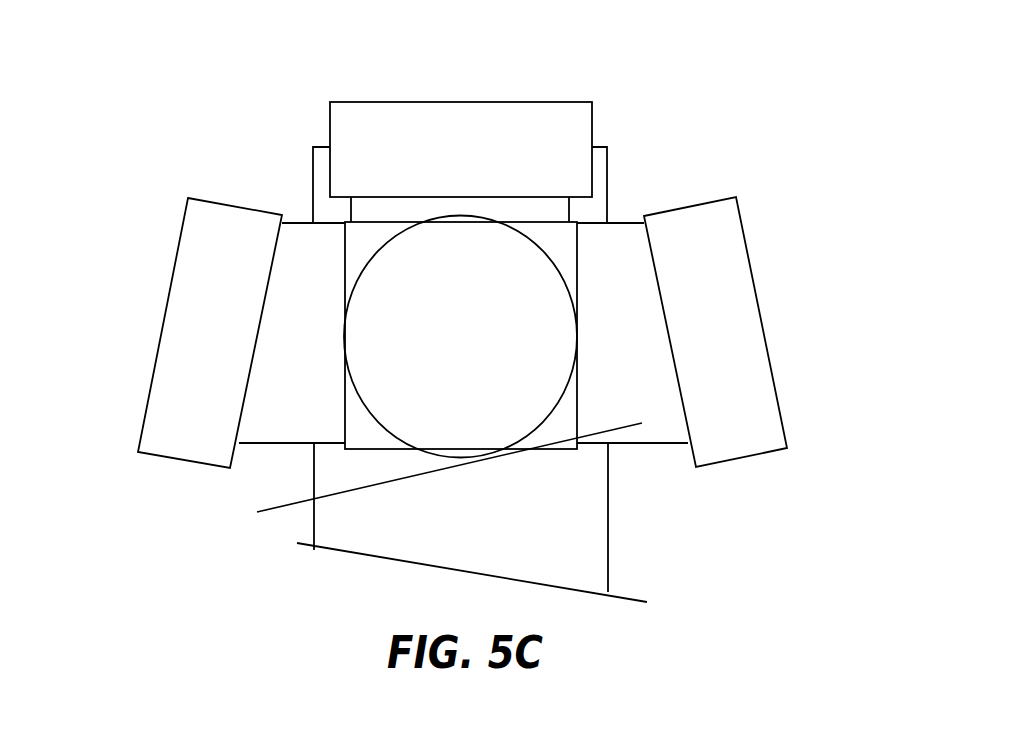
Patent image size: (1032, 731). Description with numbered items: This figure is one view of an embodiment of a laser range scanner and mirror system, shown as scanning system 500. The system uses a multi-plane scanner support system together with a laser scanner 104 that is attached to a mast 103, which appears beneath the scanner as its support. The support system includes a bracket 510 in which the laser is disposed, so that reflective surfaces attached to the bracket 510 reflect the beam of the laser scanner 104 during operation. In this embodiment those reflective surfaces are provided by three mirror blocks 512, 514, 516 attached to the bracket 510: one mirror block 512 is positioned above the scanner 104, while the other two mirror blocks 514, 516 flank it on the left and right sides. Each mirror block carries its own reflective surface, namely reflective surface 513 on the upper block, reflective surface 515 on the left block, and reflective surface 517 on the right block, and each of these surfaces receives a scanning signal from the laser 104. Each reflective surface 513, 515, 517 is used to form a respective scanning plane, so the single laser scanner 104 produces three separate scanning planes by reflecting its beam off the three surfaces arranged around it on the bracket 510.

The scanning system 500 is at (788, 107).
The mirror block 512 is at (518, 90).
The reflective surface 513 is at (434, 162).
The laser scanner 104 is at (481, 347).
The mirror block 514 is at (153, 258).
The reflective surface 515 is at (221, 425).
The mirror block 516 is at (770, 287).
The reflective surface 517 is at (758, 438).
The mast 103 is at (546, 528).
The bracket 510 is at (268, 413).